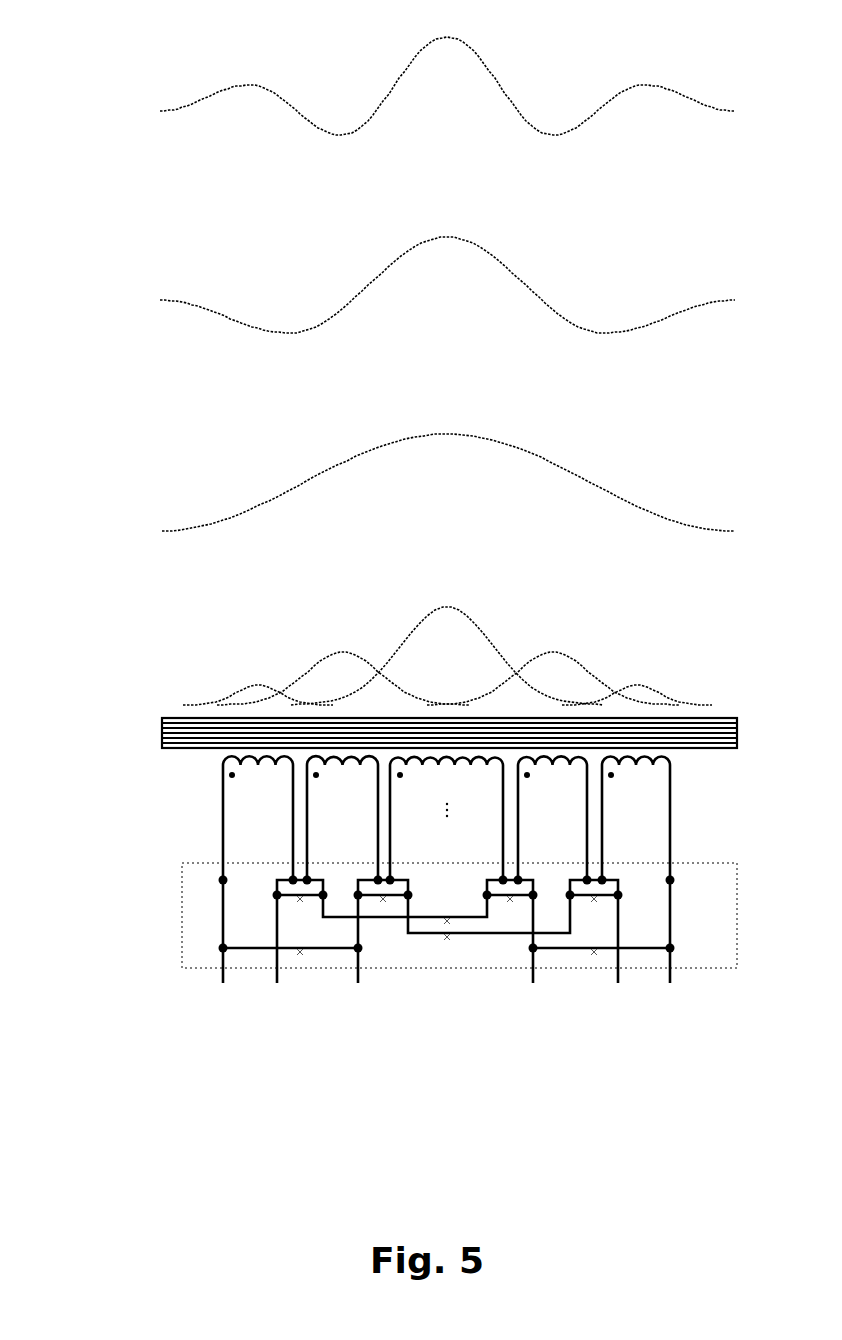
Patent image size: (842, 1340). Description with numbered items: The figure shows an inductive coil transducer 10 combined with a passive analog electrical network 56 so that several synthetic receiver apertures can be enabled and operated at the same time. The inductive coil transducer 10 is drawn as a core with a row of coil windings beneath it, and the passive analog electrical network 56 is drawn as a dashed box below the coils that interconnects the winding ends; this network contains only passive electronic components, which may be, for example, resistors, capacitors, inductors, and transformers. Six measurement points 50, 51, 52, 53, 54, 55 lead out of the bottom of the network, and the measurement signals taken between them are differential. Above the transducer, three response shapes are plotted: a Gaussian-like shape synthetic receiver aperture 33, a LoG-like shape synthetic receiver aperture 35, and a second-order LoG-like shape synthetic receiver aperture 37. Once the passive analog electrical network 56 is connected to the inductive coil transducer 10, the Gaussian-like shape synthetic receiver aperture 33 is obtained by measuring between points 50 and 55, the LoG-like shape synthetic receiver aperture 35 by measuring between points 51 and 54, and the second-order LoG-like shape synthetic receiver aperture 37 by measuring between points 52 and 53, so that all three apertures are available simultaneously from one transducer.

The inductive coil transducer 10 is at (132, 781).
The Gaussian-like shape synthetic receiver aperture 33 is at (199, 525).
The LoG-like shape synthetic receiver aperture 35 is at (176, 297).
The 2nd order LoG-like shape synthetic receiver aperture 37 is at (190, 93).
The measurement point 50 is at (223, 1009).
The measurement point 51 is at (278, 982).
The measurement point 52 is at (360, 982).
The measurement point 53 is at (533, 982).
The measurement point 54 is at (618, 982).
The measurement point 55 is at (671, 1009).
The passive analog electrical network 56 is at (182, 895).